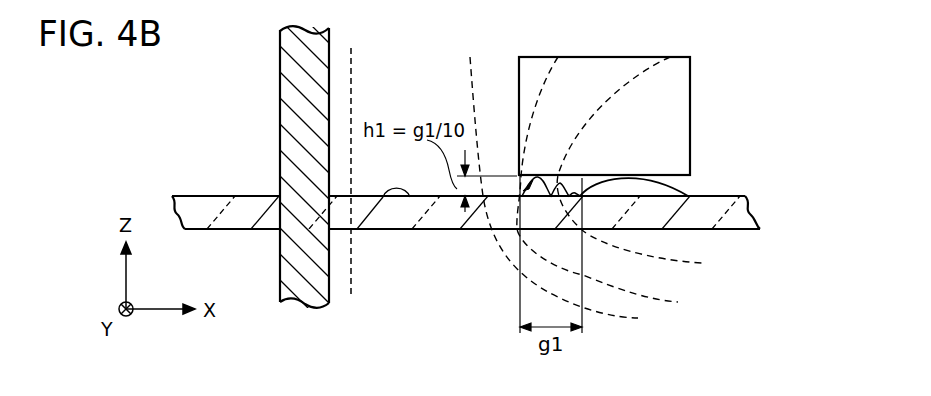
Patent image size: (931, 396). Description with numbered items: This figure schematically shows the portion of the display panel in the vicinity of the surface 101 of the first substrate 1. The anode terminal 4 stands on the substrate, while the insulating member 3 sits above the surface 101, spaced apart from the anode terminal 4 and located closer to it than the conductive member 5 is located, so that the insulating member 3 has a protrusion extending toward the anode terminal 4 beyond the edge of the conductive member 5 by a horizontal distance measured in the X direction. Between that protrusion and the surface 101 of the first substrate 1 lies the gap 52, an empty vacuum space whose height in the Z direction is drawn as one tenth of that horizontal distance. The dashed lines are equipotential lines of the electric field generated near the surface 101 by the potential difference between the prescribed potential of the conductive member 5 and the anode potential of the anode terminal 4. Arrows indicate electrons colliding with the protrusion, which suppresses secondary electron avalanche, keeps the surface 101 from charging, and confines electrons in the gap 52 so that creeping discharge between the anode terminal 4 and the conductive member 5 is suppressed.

The first substrate 1 is at (745, 207).
The insulating member 3 is at (677, 115).
The anode terminal 4 is at (287, 93).
The conductive member 5 is at (663, 193).
The gap 52 is at (536, 185).
The surface of the first substrate 101 is at (408, 197).